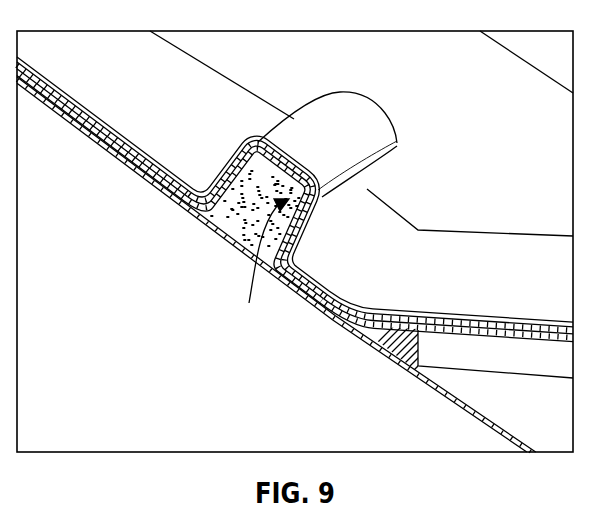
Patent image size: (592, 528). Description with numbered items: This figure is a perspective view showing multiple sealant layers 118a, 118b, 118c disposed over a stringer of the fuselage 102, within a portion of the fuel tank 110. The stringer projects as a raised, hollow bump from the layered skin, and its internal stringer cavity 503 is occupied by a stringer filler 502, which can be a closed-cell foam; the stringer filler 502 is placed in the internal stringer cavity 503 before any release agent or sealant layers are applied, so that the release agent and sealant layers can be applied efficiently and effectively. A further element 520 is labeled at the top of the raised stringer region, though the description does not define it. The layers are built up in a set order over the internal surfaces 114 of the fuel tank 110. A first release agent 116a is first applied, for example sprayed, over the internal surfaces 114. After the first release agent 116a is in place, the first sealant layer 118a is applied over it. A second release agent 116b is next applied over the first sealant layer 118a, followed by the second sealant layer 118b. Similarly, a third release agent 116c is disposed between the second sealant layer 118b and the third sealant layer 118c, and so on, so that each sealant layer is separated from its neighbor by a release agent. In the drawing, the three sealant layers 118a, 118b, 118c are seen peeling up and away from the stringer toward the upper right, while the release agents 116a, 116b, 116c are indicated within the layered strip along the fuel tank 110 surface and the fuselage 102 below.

The fuselage 102 is at (325, 327).
The fuel tank 110 is at (160, 151).
The internal surfaces 114 is at (355, 324).
The first release agent 116a is at (181, 197).
The second release agent 116b is at (283, 262).
The third release agent 116c is at (333, 287).
The first sealant layer 118a is at (318, 208).
The second sealant layer 118b is at (397, 143).
The third sealant layer 118c is at (312, 183).
The stringer filler 502 is at (242, 225).
The internal stringer cavity 503 is at (256, 266).
The raised chamber 520 is at (266, 172).